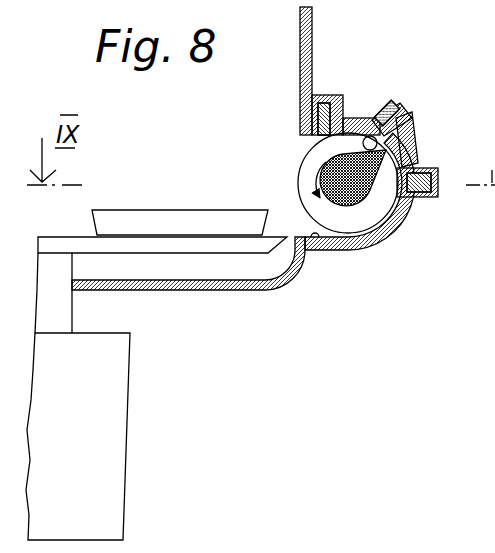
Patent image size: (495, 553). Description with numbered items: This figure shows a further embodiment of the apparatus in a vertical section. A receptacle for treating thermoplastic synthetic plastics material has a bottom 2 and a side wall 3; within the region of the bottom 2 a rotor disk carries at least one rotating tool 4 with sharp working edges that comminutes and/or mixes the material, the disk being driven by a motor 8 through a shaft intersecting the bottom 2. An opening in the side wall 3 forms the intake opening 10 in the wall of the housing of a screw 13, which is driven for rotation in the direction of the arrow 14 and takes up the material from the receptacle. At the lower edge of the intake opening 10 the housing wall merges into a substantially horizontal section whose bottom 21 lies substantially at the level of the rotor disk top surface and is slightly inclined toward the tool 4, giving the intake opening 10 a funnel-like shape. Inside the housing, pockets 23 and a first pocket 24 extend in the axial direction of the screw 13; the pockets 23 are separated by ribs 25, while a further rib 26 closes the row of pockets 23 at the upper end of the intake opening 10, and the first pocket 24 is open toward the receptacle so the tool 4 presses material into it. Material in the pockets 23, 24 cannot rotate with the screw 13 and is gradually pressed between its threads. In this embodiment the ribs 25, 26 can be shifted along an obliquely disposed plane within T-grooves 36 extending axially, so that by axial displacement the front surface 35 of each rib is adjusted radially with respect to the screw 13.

The bottom 2 is at (182, 291).
The side wall 3 is at (312, 22).
The rotating tool 4 is at (138, 210).
The motor 8 is at (120, 418).
The intake opening 10 is at (289, 207).
The screw 13 is at (343, 162).
The arrow 14 is at (318, 186).
The bottom of the horizontal section 21 is at (316, 242).
The pocket 23 is at (402, 150).
The first pocket 24 is at (387, 233).
The rib 25 is at (388, 118).
The further rib 26 is at (312, 112).
The front surface 35 is at (362, 118).
The T-groove 36 is at (327, 100).